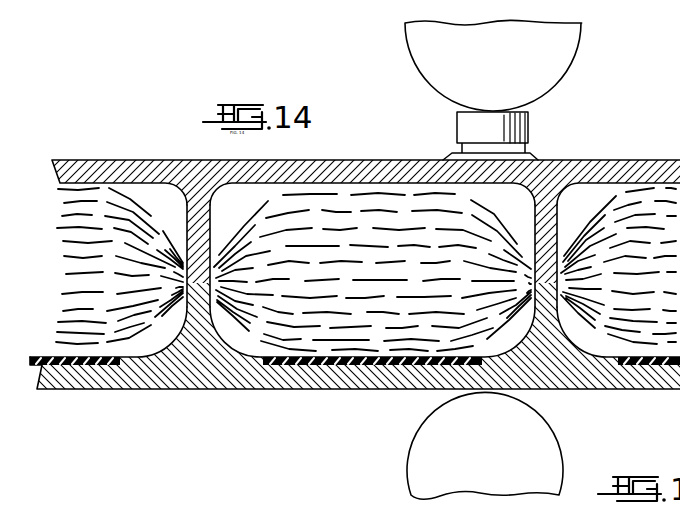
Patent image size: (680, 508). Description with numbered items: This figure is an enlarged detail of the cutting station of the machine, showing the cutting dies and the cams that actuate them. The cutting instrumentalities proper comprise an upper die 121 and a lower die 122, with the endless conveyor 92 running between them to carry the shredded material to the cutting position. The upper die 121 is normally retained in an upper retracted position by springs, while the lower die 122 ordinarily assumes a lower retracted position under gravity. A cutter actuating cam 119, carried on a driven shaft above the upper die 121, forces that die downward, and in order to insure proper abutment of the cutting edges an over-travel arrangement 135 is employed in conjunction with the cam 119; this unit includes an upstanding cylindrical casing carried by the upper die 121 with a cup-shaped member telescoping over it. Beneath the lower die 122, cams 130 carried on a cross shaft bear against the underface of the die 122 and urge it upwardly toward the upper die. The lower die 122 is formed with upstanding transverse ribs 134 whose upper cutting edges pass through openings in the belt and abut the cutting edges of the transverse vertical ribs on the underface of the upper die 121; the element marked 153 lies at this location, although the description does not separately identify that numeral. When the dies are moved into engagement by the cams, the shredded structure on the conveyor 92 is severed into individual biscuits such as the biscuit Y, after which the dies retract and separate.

The cutter actuating cams 119 is at (573, 49).
The over-travel arrangement 135 is at (528, 125).
The upper die 121 is at (136, 159).
The partition wall 153 is at (181, 192).
The biscuit Y is at (316, 203).
The endless conveyor 92 is at (30, 366).
The upstanding transverse ribs 134 is at (192, 323).
The lower die 122 is at (209, 389).
The cams 130 is at (553, 445).